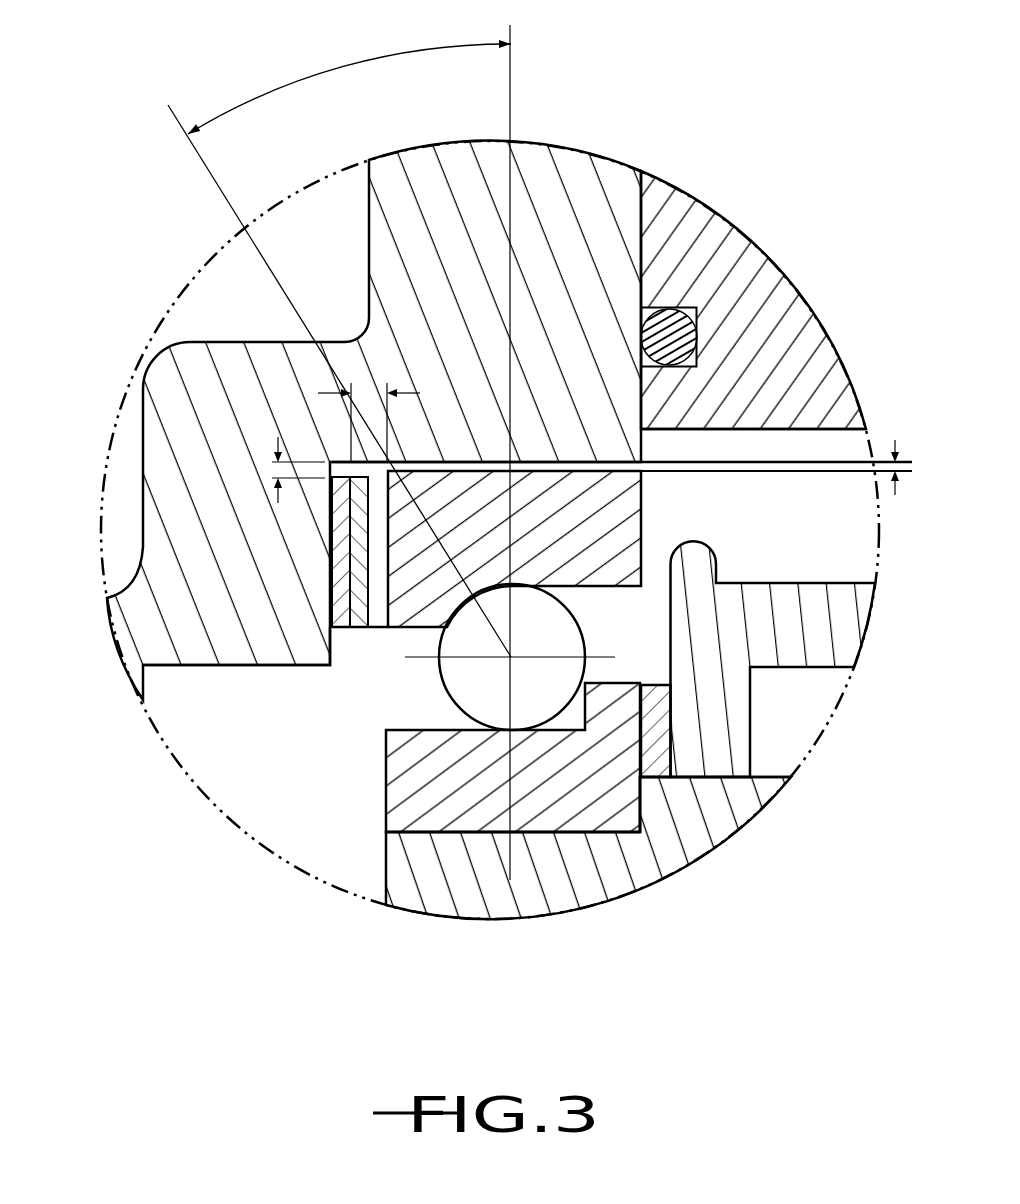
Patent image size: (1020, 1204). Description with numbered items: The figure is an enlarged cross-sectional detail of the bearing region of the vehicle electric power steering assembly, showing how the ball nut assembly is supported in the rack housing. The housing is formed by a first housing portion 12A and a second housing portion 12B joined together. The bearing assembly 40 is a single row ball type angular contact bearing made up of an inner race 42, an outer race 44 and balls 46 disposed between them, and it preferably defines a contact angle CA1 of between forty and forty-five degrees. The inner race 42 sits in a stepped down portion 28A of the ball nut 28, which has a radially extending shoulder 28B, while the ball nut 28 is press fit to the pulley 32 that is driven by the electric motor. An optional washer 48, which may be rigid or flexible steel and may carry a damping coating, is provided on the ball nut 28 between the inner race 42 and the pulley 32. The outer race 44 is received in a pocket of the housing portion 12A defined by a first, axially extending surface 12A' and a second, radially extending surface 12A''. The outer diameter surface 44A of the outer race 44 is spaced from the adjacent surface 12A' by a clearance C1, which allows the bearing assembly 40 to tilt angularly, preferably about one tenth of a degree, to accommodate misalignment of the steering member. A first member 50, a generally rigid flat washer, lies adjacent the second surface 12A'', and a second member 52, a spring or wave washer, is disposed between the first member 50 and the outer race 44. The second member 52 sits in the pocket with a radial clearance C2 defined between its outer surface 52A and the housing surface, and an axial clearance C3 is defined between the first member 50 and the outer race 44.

The first housing portion 12A is at (348, 420).
The second housing portion 12B is at (705, 220).
The first or inner axially extending surface 12A' is at (538, 545).
The second or inner radially extending surface 12A'' is at (241, 677).
The ball nut 28 is at (615, 873).
The stepped down portion 28A is at (563, 832).
The radially extending shoulder 28B is at (633, 793).
The pulley 32 is at (818, 653).
The bearing assembly 40 is at (305, 833).
The inner race 42 is at (397, 793).
The outer race 44 is at (627, 497).
The outer diameter surface 44A is at (622, 466).
The balls 46 is at (462, 687).
The washer 48 is at (672, 728).
The first member 50 is at (330, 522).
The second member 52 is at (348, 571).
The outer surface 52A is at (370, 467).
The clearance C1 is at (892, 451).
The radial clearance C2 is at (277, 472).
The axial clearance C3 is at (367, 390).
The contact angle CA1 is at (342, 55).